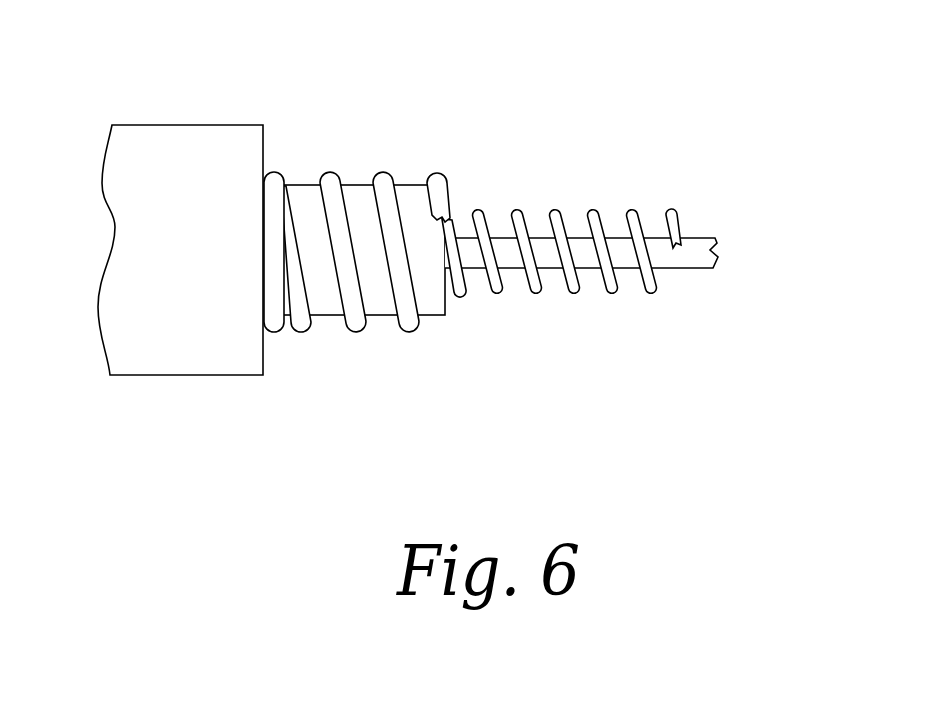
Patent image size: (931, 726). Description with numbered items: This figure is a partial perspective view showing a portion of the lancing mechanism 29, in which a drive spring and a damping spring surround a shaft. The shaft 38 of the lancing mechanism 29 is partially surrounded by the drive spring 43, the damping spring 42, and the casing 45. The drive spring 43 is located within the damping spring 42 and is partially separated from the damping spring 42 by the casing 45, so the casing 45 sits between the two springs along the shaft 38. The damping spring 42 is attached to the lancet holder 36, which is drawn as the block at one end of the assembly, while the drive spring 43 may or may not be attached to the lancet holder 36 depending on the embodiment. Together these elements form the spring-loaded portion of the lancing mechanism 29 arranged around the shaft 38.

The lancing mechanism 29 is at (135, 123).
The lancet holder 36 is at (415, 211).
The shaft 38 is at (698, 238).
The damping spring 42 is at (357, 333).
The drive spring 43 is at (612, 294).
The casing 45 is at (406, 185).